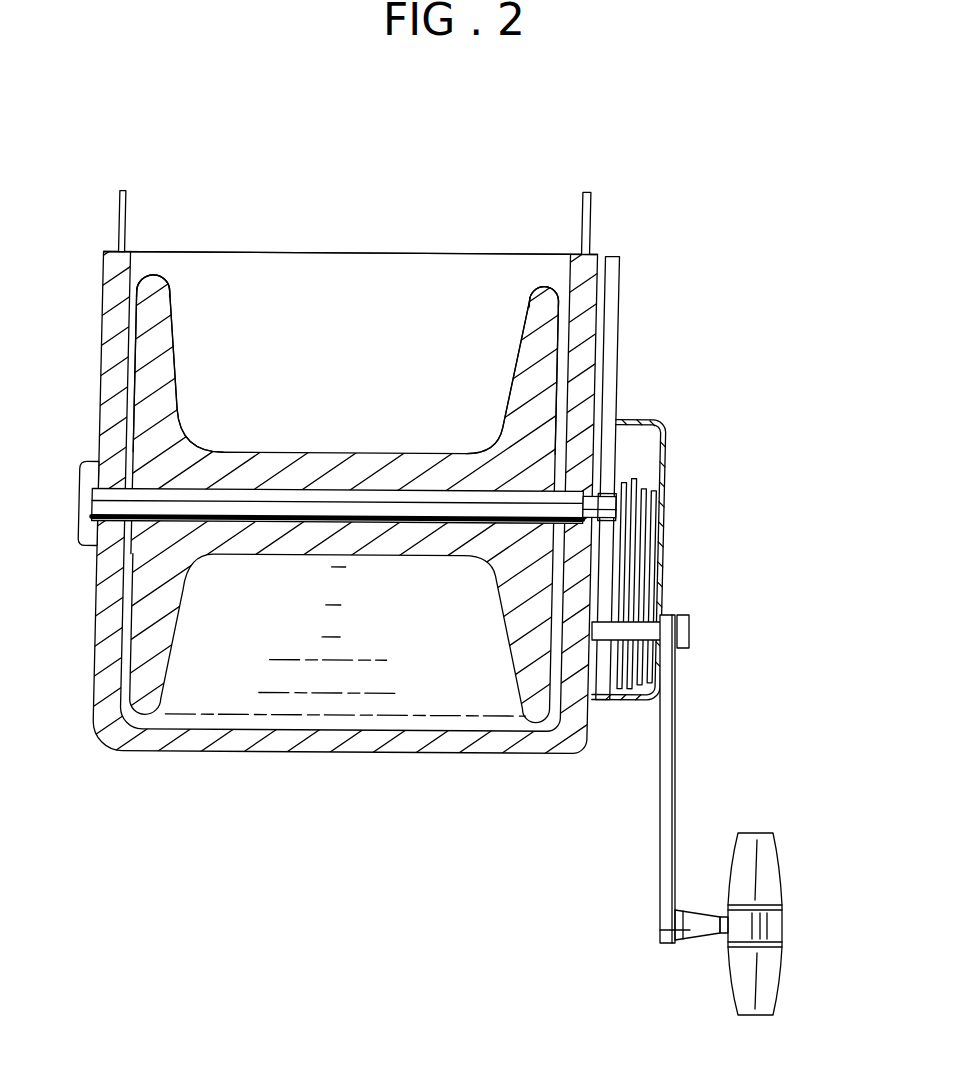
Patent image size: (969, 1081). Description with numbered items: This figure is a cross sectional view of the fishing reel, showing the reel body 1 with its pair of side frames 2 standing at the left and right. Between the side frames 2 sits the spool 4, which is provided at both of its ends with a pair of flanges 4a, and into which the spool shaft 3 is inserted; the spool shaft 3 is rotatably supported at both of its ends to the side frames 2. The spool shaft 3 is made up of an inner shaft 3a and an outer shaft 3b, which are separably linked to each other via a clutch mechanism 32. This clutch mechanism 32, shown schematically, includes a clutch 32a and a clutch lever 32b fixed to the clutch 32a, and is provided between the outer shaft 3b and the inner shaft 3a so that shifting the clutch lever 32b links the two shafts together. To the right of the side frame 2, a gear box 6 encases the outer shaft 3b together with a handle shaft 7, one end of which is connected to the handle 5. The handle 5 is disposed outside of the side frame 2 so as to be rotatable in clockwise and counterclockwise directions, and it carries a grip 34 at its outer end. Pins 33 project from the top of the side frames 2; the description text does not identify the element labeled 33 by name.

The reel body 1 is at (411, 252).
The side frames 2 is at (98, 383).
The spool shaft 3 is at (148, 535).
The inner shaft 3a is at (368, 505).
The outer shaft 3b is at (667, 505).
The spool 4 is at (174, 318).
The flanges 4a is at (157, 283).
The handle 5 is at (677, 750).
The gear box 6 is at (671, 538).
The handle shaft 7 is at (692, 630).
The clutch mechanism 32 is at (619, 468).
The clutch 32a is at (603, 517).
The clutch lever 32b is at (617, 318).
The guide pin 33 is at (116, 210).
The grip 34 is at (777, 872).